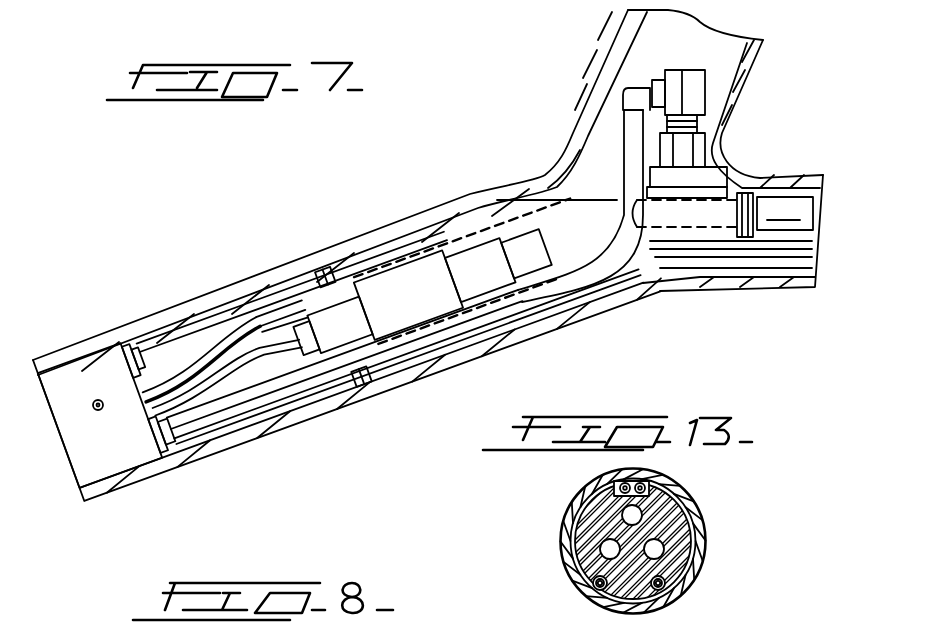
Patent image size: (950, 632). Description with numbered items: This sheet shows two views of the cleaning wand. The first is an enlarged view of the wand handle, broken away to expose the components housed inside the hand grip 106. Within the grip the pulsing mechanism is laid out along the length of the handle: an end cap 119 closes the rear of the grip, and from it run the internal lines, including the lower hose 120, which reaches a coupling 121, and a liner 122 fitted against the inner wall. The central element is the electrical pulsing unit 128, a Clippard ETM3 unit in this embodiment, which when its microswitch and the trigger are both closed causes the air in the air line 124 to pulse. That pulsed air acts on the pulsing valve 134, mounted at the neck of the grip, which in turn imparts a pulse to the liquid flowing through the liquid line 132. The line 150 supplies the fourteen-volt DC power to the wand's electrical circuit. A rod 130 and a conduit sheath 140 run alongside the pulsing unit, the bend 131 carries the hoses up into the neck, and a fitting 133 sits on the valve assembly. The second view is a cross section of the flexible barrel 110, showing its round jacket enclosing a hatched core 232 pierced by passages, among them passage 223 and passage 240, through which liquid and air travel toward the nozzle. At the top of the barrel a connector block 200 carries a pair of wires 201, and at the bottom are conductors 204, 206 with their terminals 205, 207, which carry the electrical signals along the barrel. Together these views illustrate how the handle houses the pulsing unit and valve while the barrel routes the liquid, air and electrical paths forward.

In FIG. 7, the hand grip 106 is at (622, 45).
In FIG. 7, the end cap 119 is at (122, 455).
In FIG. 7, the lower hose 120 is at (238, 373).
In FIG. 7, the coupling 121 is at (338, 334).
In FIG. 7, the liner 122 is at (495, 213).
In FIG. 7, the air line 124 is at (557, 280).
In FIG. 7, the electrical pulsing unit 128 is at (430, 307).
In FIG. 7, the rod 130 is at (187, 343).
In FIG. 7, the bend 131 is at (567, 172).
In FIG. 7, the liquid line 132 is at (787, 213).
In FIG. 7, the valve 133 is at (700, 147).
In FIG. 7, the pulsing valve 134 is at (680, 213).
In FIG. 7, the conduit sheath 140 is at (298, 373).
In FIG. 7, the line 150 is at (157, 387).
In FIG. 13, the flexible barrel 110 is at (693, 515).
In FIG. 13, the connector block 200 is at (614, 473).
In FIG. 13, the wires 201 is at (647, 479).
In FIG. 13, the conductor 204 is at (596, 582).
In FIG. 13, the conductor terminal 205 is at (603, 596).
In FIG. 13, the conductor 206 is at (664, 583).
In FIG. 13, the conductor terminal 207 is at (657, 597).
In FIG. 13, the passage 223 is at (603, 549).
In FIG. 13, the core 232 is at (683, 559).
In FIG. 13, the passage 240 is at (661, 551).